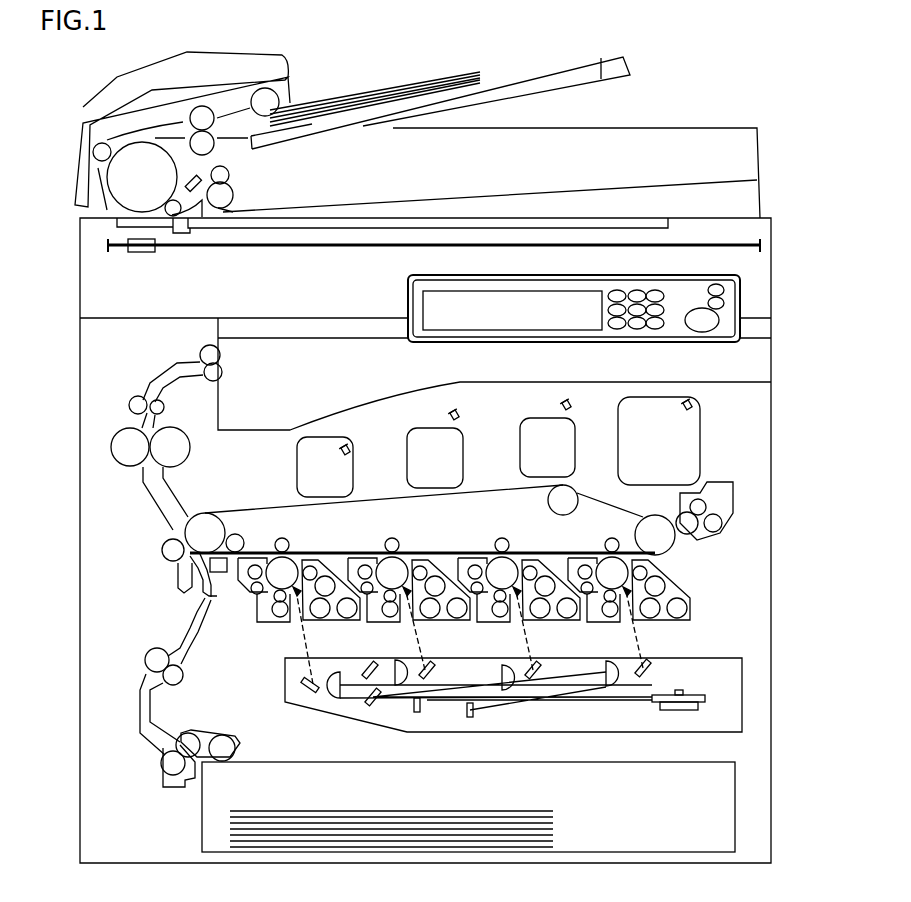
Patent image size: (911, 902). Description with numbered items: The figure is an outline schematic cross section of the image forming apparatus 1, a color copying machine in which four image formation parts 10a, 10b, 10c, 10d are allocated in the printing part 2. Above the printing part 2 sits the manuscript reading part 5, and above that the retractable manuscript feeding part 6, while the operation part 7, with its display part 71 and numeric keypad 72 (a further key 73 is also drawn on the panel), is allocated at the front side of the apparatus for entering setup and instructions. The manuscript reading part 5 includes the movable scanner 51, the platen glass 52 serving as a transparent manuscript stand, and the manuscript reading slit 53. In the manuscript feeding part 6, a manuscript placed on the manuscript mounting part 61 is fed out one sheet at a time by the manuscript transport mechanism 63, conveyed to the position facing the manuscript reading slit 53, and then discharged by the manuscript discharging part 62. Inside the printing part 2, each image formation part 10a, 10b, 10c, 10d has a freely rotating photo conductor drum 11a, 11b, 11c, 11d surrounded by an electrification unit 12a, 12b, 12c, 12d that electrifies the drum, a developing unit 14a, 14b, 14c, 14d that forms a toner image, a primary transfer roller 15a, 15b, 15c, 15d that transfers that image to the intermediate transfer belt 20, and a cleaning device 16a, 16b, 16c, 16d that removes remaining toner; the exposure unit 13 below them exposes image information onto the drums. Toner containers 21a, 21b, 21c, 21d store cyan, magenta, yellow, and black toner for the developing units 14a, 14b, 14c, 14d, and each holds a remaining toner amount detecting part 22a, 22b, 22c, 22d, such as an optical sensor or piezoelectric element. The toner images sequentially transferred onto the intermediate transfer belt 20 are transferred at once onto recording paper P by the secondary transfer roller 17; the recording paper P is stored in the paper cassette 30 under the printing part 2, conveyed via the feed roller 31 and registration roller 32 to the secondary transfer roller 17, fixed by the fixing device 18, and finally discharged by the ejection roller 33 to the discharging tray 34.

The image forming apparatus 1 is at (694, 70).
The printing part 2 is at (779, 477).
The manuscript reading part 5 is at (67, 238).
The manuscript feeding part 6 is at (426, 58).
The operation part 7 is at (756, 287).
The image formation part 10a is at (258, 628).
The image formation part 10b is at (368, 628).
The image formation part 10c is at (478, 628).
The image formation part 10d is at (588, 628).
The photo conductor drum 11a is at (282, 573).
The photo conductor drum 11b is at (392, 573).
The photo conductor drum 11c is at (502, 573).
The photo conductor drum 11d is at (612, 573).
The electrification unit 12a is at (278, 603).
The electrification unit 12b is at (388, 603).
The electrification unit 12c is at (498, 603).
The electrification unit 12d is at (608, 603).
The exposure unit 13 is at (742, 682).
The developing unit 14a is at (322, 566).
The developing unit 14b is at (432, 566).
The developing unit 14c is at (544, 566).
The developing unit 14d is at (673, 594).
The primary transfer roller 15a is at (284, 540).
The primary transfer roller 15b is at (394, 540).
The primary transfer roller 15c is at (505, 540).
The primary transfer roller 15d is at (615, 540).
The cleaning device 16a is at (256, 565).
The cleaning device 16b is at (366, 565).
The cleaning device 16c is at (477, 565).
The cleaning device 16d is at (587, 565).
The secondary transfer roller 17 is at (168, 549).
The fixing device 18 is at (120, 447).
The intermediate transfer belt 20 is at (237, 508).
The toner container 21a is at (348, 437).
The toner container 21b is at (450, 428).
The toner container 21c is at (553, 416).
The toner container 21d is at (700, 456).
The remaining toner amount detecting part 22a is at (350, 456).
The remaining toner amount detecting part 22b is at (460, 446).
The remaining toner amount detecting part 22c is at (572, 437).
The remaining toner amount detecting part 22d is at (695, 414).
The paper cassette 30 is at (737, 800).
The feed roller 31 is at (227, 746).
The registration roller 32 is at (208, 620).
The ejection roller 33 is at (220, 354).
The discharging tray 34 is at (340, 410).
The scanner 51 is at (142, 250).
The platen glass 52 is at (600, 220).
The manuscript reading slit 53 is at (150, 223).
The manuscript mounting part 61 is at (493, 85).
The manuscript discharging part 62 is at (493, 197).
The manuscript transport mechanism 63 is at (123, 72).
The display part 71 is at (547, 310).
The numeric keypad 72 is at (637, 312).
The start key 73 is at (703, 324).
The recording paper P is at (452, 817).